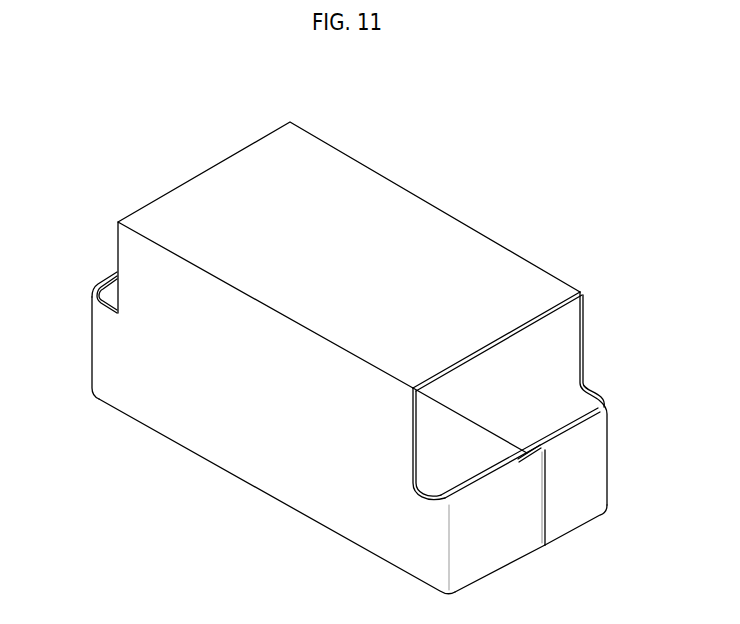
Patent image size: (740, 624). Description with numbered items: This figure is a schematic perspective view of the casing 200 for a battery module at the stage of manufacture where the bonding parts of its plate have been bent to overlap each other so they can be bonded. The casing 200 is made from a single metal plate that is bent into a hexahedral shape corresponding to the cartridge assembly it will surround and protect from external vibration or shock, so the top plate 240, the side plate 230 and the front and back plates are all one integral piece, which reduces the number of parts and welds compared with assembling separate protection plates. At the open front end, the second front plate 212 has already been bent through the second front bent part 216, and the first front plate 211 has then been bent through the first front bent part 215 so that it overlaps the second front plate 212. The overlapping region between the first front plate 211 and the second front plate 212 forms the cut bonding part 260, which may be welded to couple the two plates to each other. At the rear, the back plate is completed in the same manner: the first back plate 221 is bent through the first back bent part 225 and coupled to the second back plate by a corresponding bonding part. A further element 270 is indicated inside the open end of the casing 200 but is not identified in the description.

The casing 200 is at (528, 134).
The top plate 240 is at (347, 168).
The side plate 230 is at (210, 440).
The first back plate 221 is at (108, 274).
The first back bent part 225 is at (92, 340).
The second front bent part 216 is at (607, 452).
The second front plate 212 is at (587, 505).
The first front plate 211 is at (498, 556).
The bonding part 260 is at (534, 512).
The first front bent part 215 is at (449, 546).
The inner portion 270 is at (462, 452).